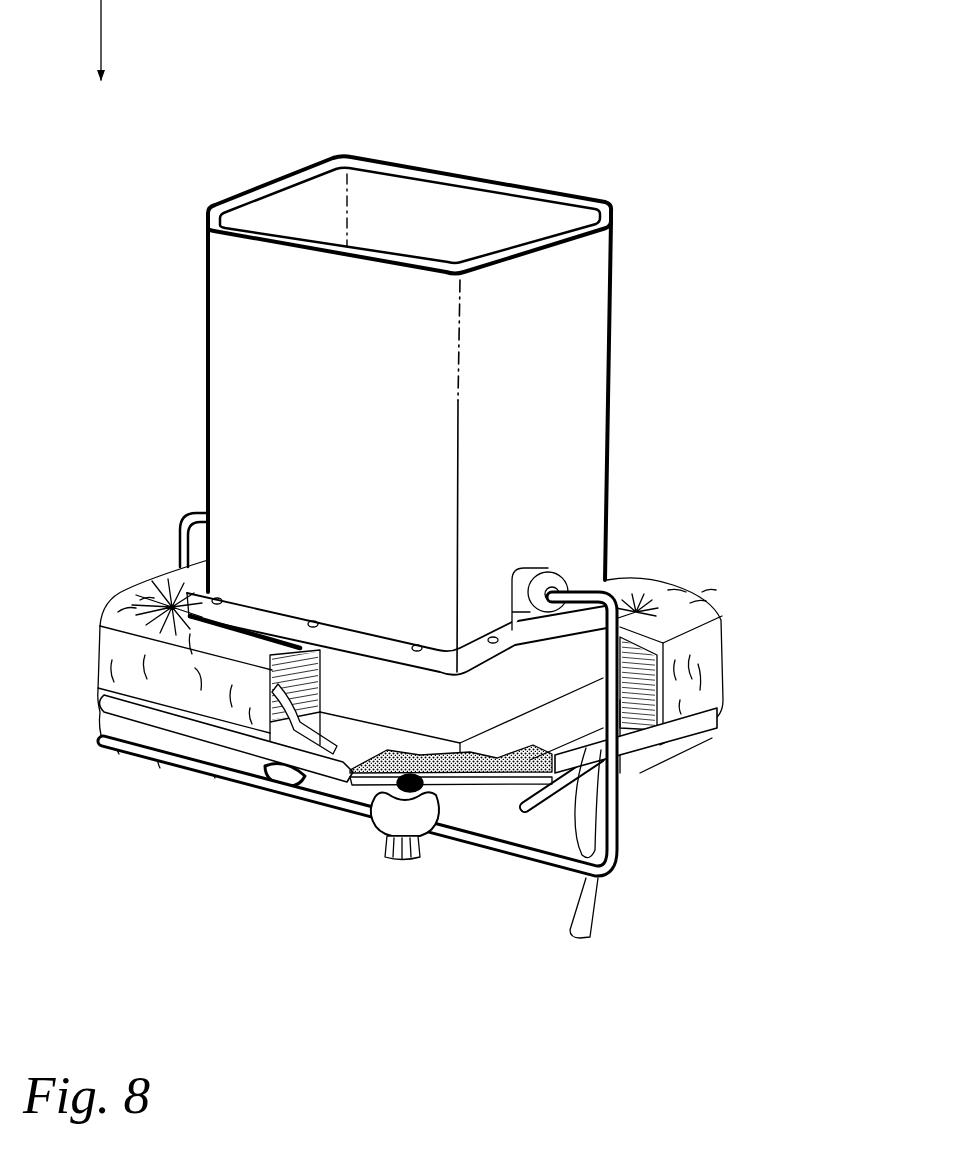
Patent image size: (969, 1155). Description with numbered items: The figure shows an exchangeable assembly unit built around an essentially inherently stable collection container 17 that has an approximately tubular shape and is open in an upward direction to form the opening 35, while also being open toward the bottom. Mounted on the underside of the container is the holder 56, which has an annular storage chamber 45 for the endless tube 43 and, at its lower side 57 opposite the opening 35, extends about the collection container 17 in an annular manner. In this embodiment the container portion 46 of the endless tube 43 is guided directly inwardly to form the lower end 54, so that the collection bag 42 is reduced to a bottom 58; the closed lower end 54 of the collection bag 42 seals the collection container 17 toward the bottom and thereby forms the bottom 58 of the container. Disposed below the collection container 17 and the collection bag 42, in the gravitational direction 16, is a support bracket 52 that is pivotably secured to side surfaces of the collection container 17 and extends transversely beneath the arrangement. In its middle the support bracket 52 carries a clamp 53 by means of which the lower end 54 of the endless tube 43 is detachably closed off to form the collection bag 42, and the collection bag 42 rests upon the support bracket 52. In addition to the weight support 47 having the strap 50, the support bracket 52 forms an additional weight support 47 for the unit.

The gravitational direction 16 is at (101, 37).
The opening 35 is at (419, 228).
The collection container 17 is at (572, 385).
The lower side 57 is at (354, 636).
The annular storage chamber 45 is at (330, 720).
The holder 56 is at (532, 704).
The endless tube 43 is at (724, 648).
The weight support 47 is at (305, 810).
The strap 50 is at (716, 718).
The container portion 46 is at (160, 757).
The collection bag 42 is at (380, 810).
The clamp 53 is at (412, 828).
The lower end 54 is at (493, 788).
The bottom 58 is at (510, 793).
The support bracket 52 is at (616, 812).